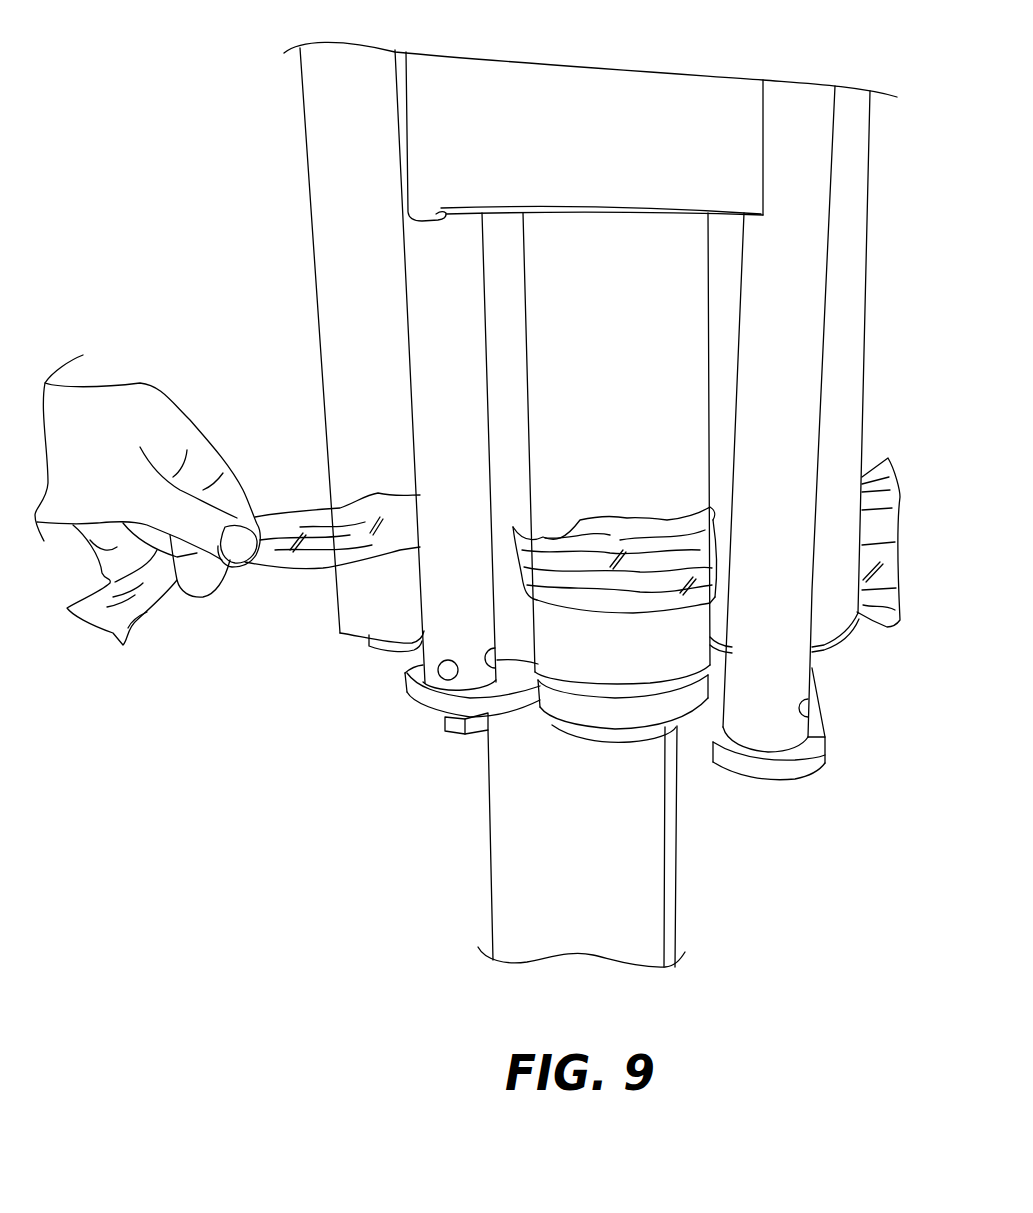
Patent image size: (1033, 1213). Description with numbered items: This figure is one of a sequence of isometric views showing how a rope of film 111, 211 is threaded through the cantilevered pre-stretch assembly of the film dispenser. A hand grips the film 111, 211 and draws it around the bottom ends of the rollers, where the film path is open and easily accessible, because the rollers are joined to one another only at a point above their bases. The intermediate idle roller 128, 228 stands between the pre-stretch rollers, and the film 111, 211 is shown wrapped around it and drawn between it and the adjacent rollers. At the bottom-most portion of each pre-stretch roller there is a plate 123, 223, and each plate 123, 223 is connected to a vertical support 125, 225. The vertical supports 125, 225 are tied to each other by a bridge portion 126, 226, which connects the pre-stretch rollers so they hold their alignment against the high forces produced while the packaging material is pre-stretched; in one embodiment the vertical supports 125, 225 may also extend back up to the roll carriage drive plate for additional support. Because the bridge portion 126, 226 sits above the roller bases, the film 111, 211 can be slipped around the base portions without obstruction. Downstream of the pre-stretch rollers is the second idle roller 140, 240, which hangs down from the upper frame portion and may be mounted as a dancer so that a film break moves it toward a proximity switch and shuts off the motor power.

The film 111 is at (483, 519).
The film 211 is at (627, 543).
The plate 123 is at (590, 779).
The plate 223 is at (430, 692).
The vertical support 125 is at (627, 419).
The vertical support 225 is at (472, 334).
The bridge portion 126 is at (584, 136).
The bridge portion 226 is at (608, 134).
The intermediate idle roller 128 is at (594, 590).
The central column 228 is at (650, 324).
The second idle roller 140 is at (362, 365).
The side panel 240 is at (392, 262).